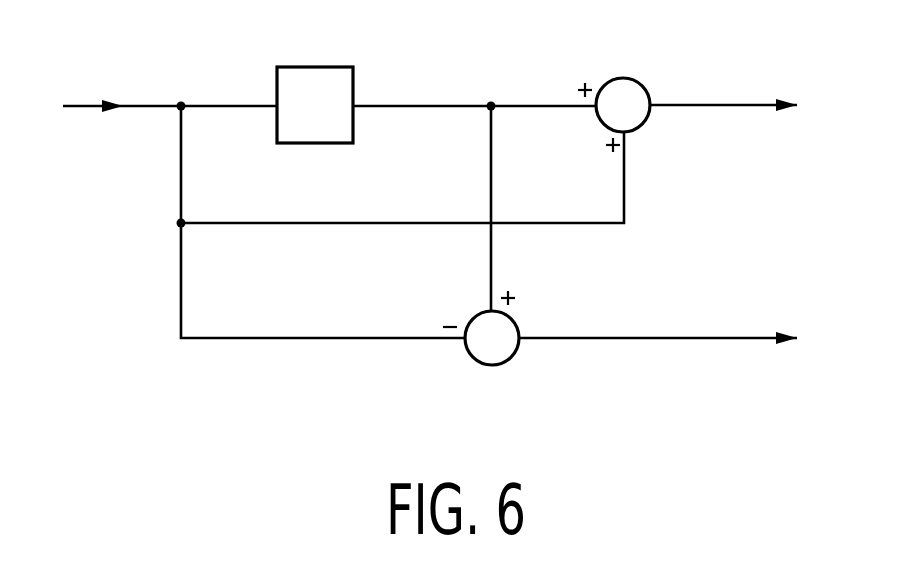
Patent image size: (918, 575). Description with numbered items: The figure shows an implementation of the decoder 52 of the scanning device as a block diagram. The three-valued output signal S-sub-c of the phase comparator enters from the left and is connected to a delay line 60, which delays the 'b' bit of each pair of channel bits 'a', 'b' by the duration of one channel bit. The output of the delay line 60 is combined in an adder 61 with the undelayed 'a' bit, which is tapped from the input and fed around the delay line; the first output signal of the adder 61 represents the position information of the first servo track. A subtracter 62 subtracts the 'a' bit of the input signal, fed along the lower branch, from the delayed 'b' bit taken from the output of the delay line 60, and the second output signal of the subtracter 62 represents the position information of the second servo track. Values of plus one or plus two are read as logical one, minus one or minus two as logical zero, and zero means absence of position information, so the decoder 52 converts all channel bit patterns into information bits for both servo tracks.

The decoder 52 is at (96, 322).
The delay line 60 is at (318, 77).
The adder 61 is at (628, 85).
The subtracter 62 is at (492, 355).